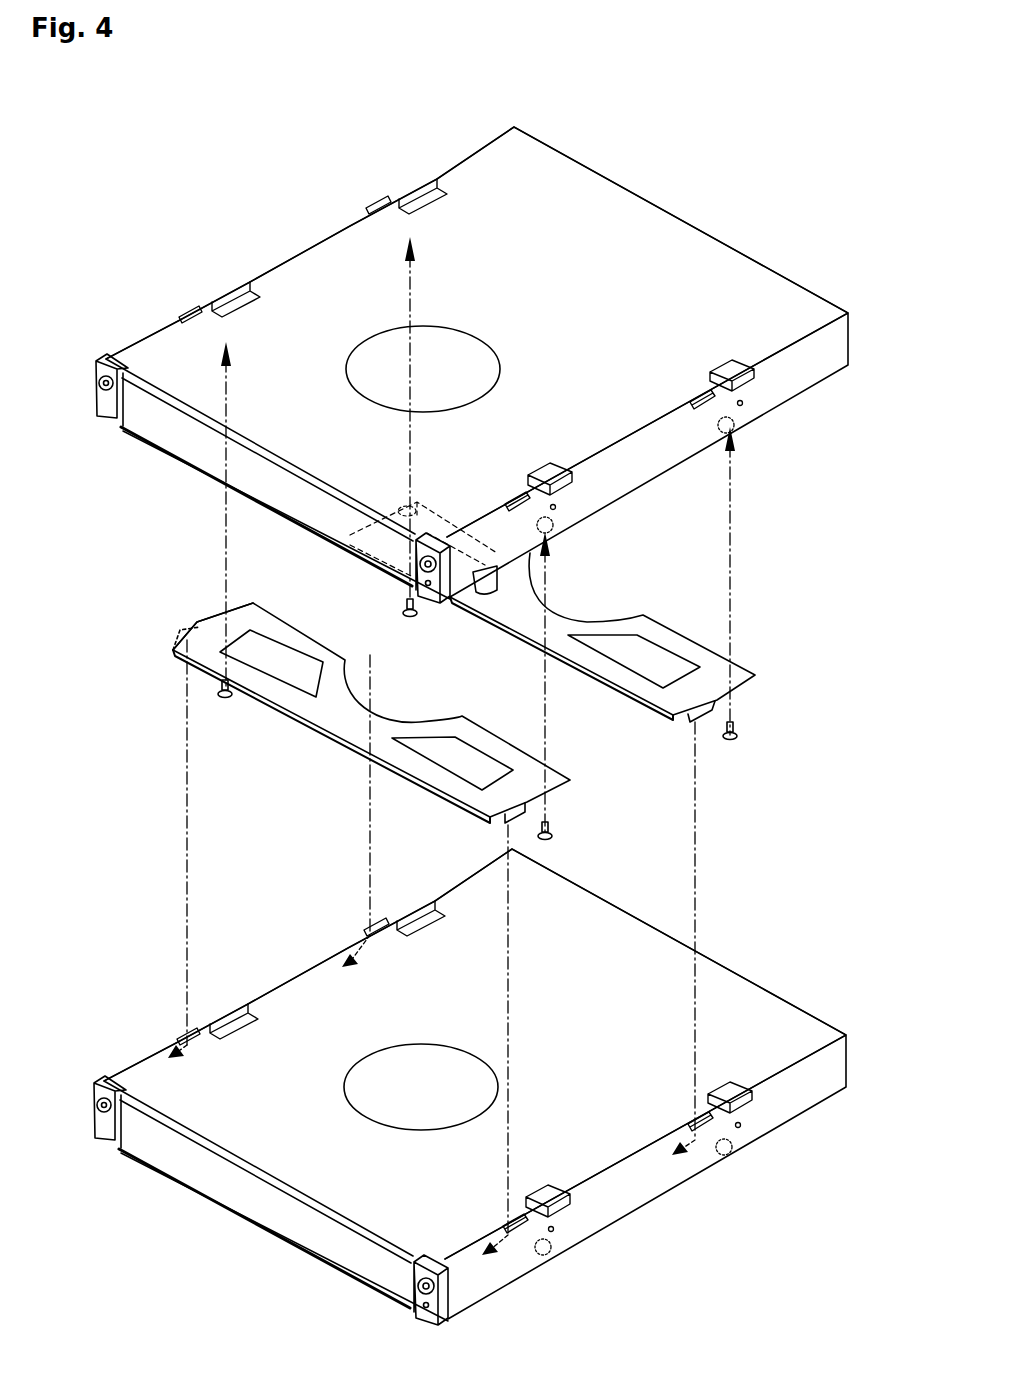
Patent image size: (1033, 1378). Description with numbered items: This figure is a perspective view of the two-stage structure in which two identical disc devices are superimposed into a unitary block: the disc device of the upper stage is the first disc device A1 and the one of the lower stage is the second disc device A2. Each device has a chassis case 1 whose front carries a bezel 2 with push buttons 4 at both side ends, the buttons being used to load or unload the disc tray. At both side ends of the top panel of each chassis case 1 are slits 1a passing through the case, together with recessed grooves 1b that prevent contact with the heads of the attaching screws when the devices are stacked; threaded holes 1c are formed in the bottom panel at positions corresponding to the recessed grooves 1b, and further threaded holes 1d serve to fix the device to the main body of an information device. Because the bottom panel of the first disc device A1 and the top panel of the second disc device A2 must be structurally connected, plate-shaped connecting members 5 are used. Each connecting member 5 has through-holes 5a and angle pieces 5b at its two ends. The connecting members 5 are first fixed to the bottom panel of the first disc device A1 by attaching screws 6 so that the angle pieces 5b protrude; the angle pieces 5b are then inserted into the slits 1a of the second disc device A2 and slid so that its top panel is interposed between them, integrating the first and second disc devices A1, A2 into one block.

The chassis case 1 is at (617, 215).
The slits 1a is at (373, 207).
The recessed grooves 1b is at (413, 192).
The threaded holes 1c is at (705, 433).
The threaded holes 1d is at (745, 403).
The bezel 2 is at (190, 443).
The push buttons 4 is at (107, 418).
The connecting member 5 is at (343, 747).
The through-holes 5a is at (230, 605).
The angle pieces 5b is at (177, 650).
The attaching screws 6 is at (220, 703).
The first disc device A1 is at (742, 243).
The second disc device A2 is at (747, 966).